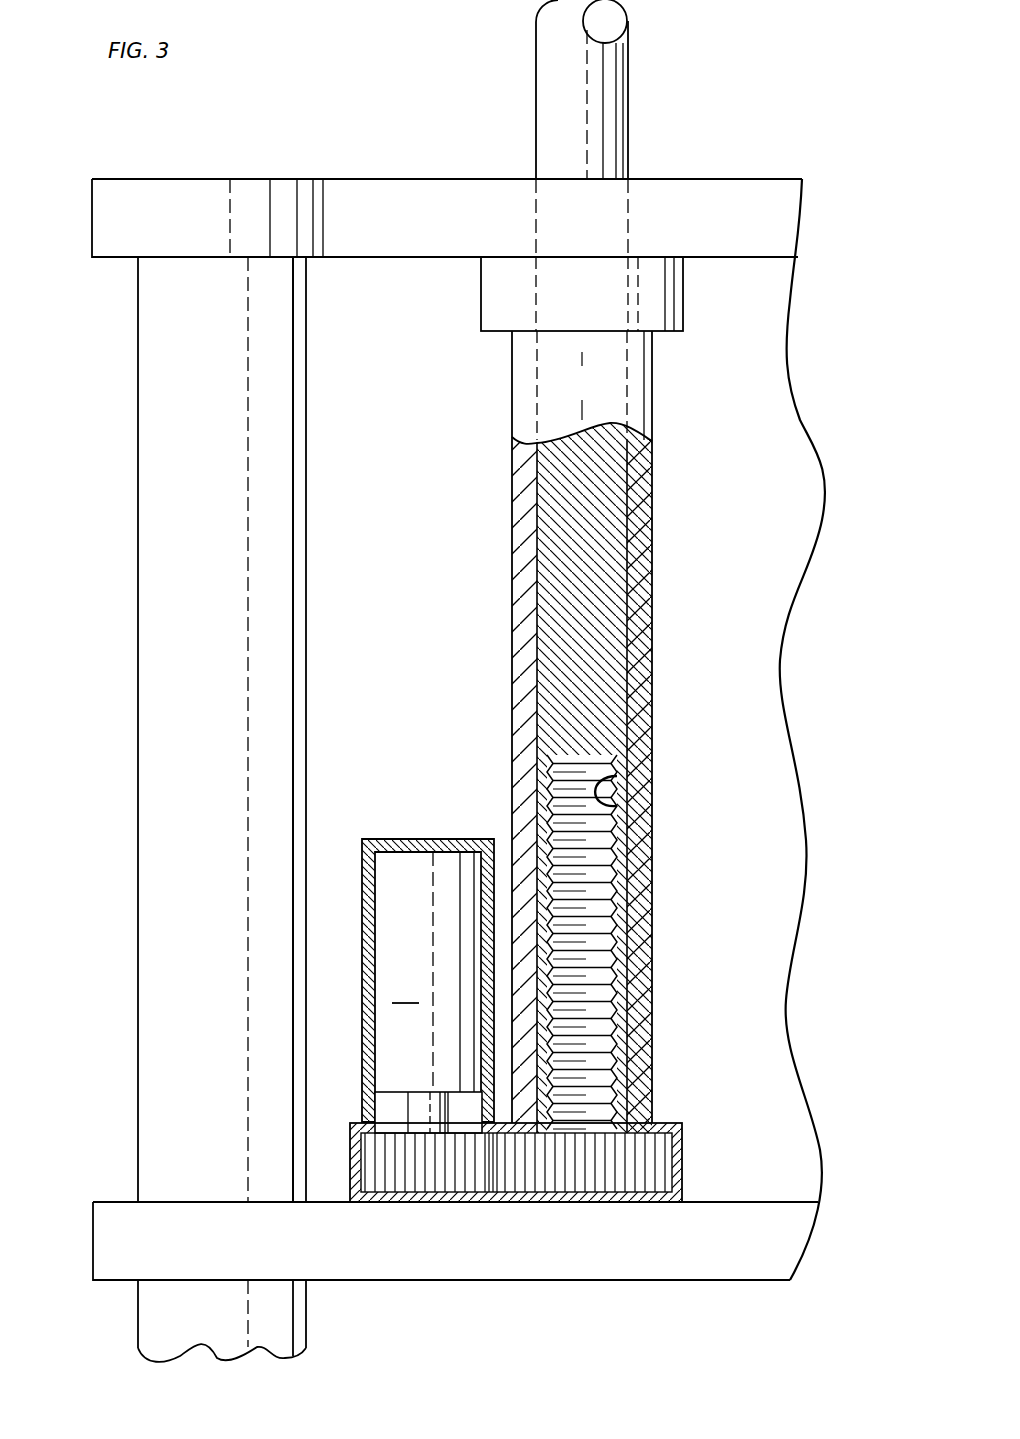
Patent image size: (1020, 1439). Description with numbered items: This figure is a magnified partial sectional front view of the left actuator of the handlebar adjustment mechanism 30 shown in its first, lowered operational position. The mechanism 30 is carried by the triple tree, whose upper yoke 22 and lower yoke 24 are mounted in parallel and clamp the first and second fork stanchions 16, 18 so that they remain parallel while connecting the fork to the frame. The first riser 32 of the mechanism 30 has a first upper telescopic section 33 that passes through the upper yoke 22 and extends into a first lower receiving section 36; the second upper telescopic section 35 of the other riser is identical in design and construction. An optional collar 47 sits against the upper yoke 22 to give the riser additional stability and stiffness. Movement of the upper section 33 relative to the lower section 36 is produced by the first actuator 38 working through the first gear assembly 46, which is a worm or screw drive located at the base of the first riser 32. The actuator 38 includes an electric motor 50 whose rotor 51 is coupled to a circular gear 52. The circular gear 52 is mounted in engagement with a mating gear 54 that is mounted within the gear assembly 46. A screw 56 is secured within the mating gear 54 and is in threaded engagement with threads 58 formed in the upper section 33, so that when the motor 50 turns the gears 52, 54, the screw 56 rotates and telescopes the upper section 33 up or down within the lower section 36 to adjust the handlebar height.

The first fork stanchion 16 is at (160, 478).
The second fork stanchion 18 is at (138, 718).
The upper yoke 22 is at (420, 205).
The lower yoke 24 is at (118, 1247).
The handlebar adjustment mechanism 30 is at (372, 460).
The first riser 32 is at (633, 732).
The first upper telescopic section 33 is at (633, 121).
The second upper telescopic section 35 is at (608, 535).
The first lower receiving section 36 is at (650, 722).
The first actuator 38 is at (378, 948).
The first gear assembly 46 is at (524, 1162).
The collar 47 is at (497, 295).
The electric motor 50 is at (406, 991).
The rotor 51 is at (415, 1110).
The circular gear 52 is at (388, 1165).
The mating gear 54 is at (640, 1172).
The screw 56 is at (620, 1015).
The threads 58 is at (616, 806).